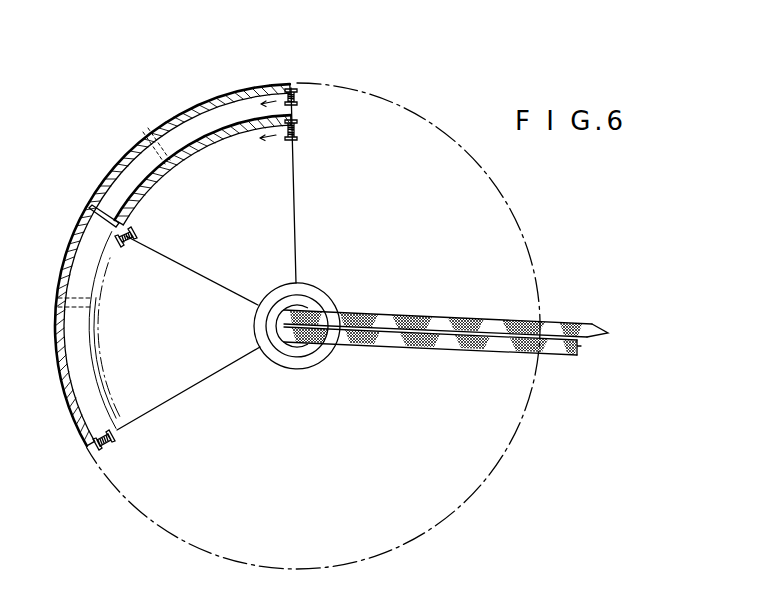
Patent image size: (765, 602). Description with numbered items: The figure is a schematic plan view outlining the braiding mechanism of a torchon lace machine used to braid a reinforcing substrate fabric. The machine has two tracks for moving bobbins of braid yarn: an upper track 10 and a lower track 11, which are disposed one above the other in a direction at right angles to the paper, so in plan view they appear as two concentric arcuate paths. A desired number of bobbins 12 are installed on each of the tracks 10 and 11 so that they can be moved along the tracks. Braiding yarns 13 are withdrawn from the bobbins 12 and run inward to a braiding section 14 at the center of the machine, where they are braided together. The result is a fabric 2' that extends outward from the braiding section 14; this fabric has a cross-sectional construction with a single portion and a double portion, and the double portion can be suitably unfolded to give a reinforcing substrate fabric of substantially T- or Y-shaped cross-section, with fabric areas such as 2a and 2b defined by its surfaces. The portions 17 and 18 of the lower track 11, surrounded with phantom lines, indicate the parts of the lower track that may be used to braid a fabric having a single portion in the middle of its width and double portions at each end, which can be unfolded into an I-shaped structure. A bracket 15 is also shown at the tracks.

The upper track 10 is at (192, 105).
The lower track 11 is at (229, 135).
The bobbins 12 is at (296, 129).
The braiding yarns 13 is at (294, 192).
The braiding section 14 is at (320, 283).
The bracket 15 is at (104, 213).
The portion of the lower track 17 is at (180, 163).
The portion of the lower track 18 is at (102, 380).
The fabric 2' is at (438, 298).
The fabric area 2a is at (578, 350).
The fabric area 2b is at (574, 322).